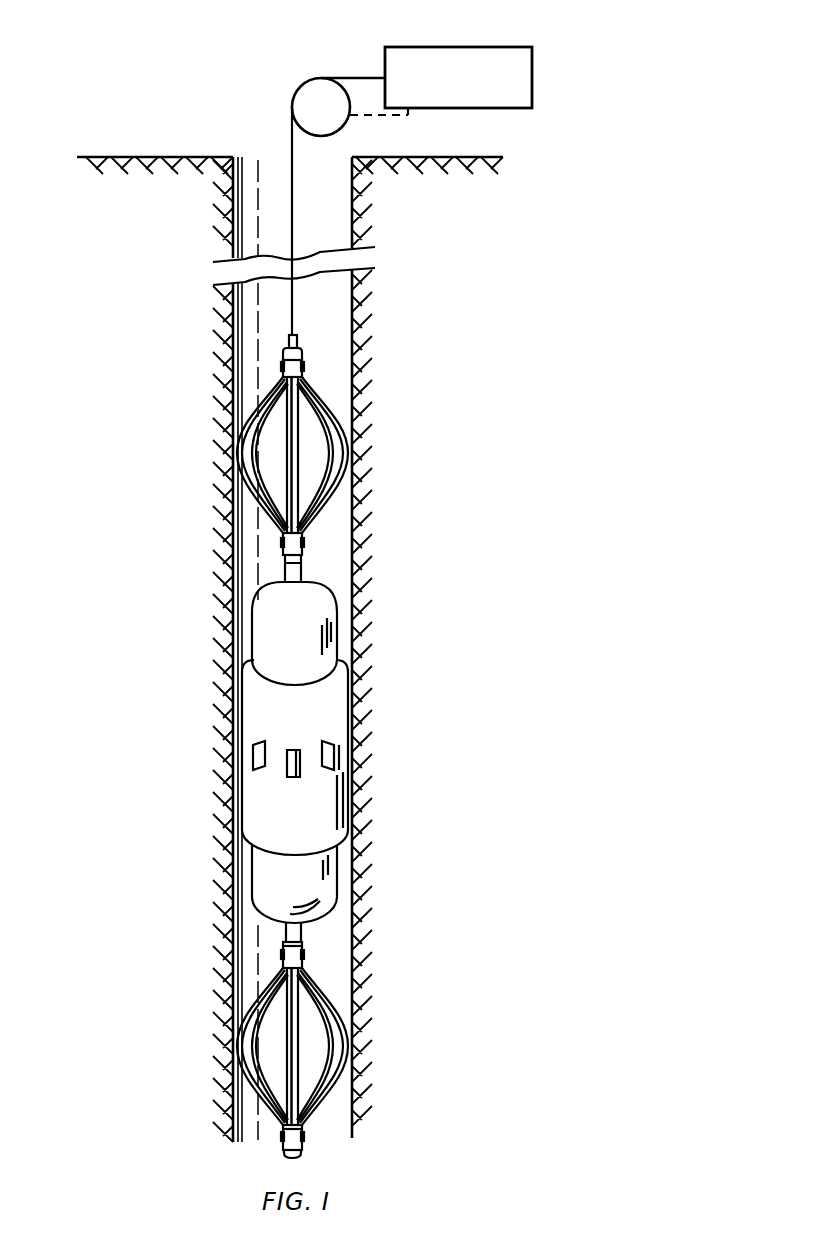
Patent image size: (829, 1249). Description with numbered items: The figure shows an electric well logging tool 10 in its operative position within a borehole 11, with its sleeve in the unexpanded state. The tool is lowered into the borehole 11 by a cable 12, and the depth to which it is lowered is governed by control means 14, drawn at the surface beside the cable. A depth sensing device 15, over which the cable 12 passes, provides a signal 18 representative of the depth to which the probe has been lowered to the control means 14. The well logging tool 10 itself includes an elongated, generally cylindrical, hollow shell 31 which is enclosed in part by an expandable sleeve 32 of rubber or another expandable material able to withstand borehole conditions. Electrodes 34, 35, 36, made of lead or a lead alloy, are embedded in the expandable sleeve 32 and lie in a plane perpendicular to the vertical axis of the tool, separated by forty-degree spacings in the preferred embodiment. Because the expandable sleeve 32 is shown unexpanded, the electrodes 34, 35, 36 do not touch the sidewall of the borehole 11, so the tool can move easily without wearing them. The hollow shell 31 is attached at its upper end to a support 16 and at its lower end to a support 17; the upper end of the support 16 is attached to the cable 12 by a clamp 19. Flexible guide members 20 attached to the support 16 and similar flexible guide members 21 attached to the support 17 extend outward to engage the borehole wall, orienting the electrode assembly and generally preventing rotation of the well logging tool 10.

The electric well logging tool 10 is at (298, 762).
The borehole 11 is at (240, 347).
The cable 12 is at (292, 213).
The control means 14 is at (458, 47).
The depth sensing device 15 is at (349, 117).
The support 16 is at (292, 465).
The support 17 is at (294, 1050).
The signal 18 is at (404, 116).
The clamp 19 is at (295, 345).
The flexible guide members 20 is at (237, 486).
The flexible guide members 21 is at (238, 1090).
The elongated generally cylindrical hollow shell 31 is at (346, 640).
The expandable sleeve 32 is at (335, 706).
The electrode 34 is at (242, 710).
The electrode 35 is at (294, 778).
The electrode 36 is at (334, 752).